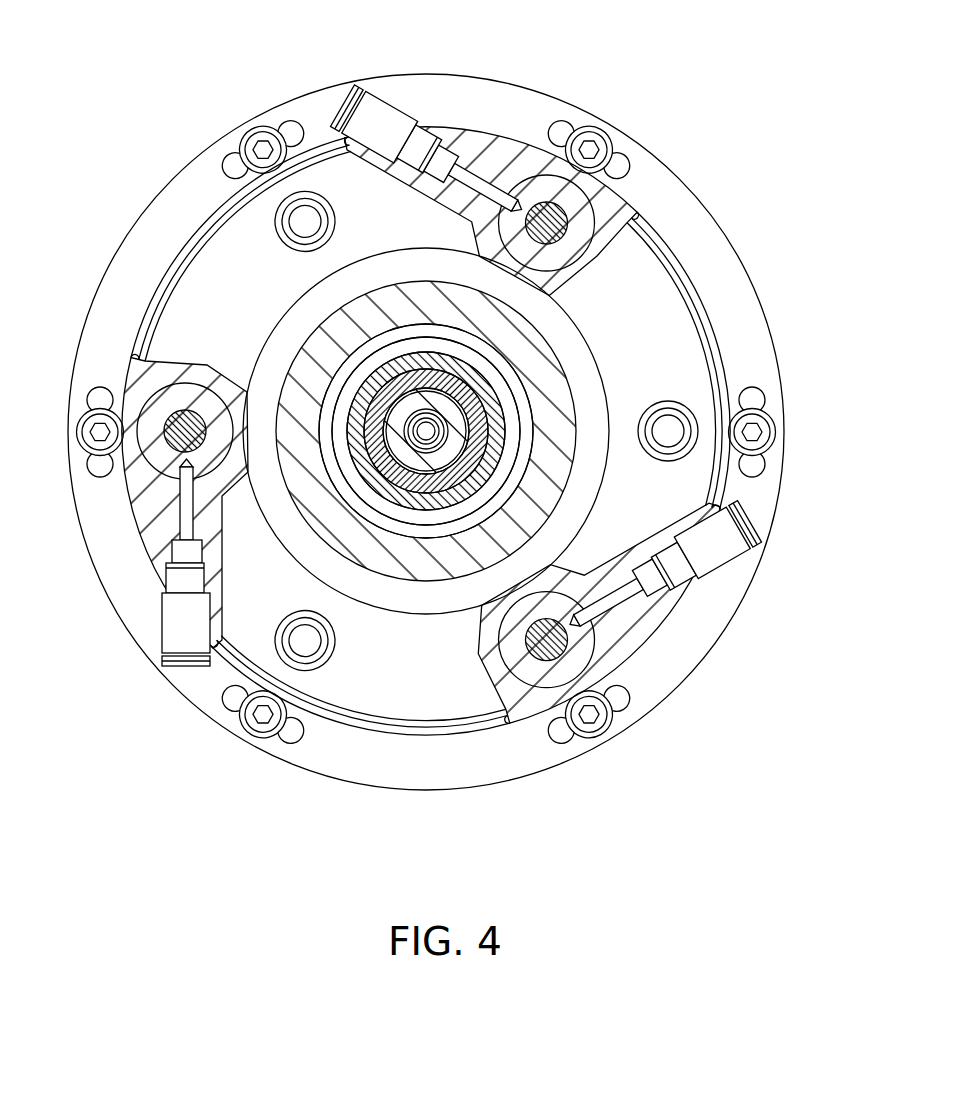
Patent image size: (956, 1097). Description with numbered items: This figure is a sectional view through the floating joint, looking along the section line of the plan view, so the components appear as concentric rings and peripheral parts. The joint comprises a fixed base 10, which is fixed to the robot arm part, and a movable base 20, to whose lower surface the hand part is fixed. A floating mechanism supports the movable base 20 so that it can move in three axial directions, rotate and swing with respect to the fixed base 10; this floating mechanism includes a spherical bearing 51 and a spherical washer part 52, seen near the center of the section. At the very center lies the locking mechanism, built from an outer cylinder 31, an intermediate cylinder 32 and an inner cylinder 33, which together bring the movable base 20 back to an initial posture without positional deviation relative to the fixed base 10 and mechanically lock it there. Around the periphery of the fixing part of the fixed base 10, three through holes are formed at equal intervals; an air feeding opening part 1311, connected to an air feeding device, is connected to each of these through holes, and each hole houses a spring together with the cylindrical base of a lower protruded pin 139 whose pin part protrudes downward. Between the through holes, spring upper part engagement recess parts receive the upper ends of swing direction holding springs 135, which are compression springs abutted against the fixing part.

The fixed base 10 is at (717, 306).
The movable base 20 is at (772, 320).
The outer cylinder 31 is at (505, 430).
The intermediate cylinder 32 is at (425, 488).
The inner cylinder 33 is at (405, 458).
The spherical bearing 51 is at (493, 373).
The spherical washer part 52 is at (517, 383).
The swing direction holding spring 135 is at (682, 412).
The lower protruded pin 139 is at (552, 646).
The air feeding opening part 1311 is at (383, 120).